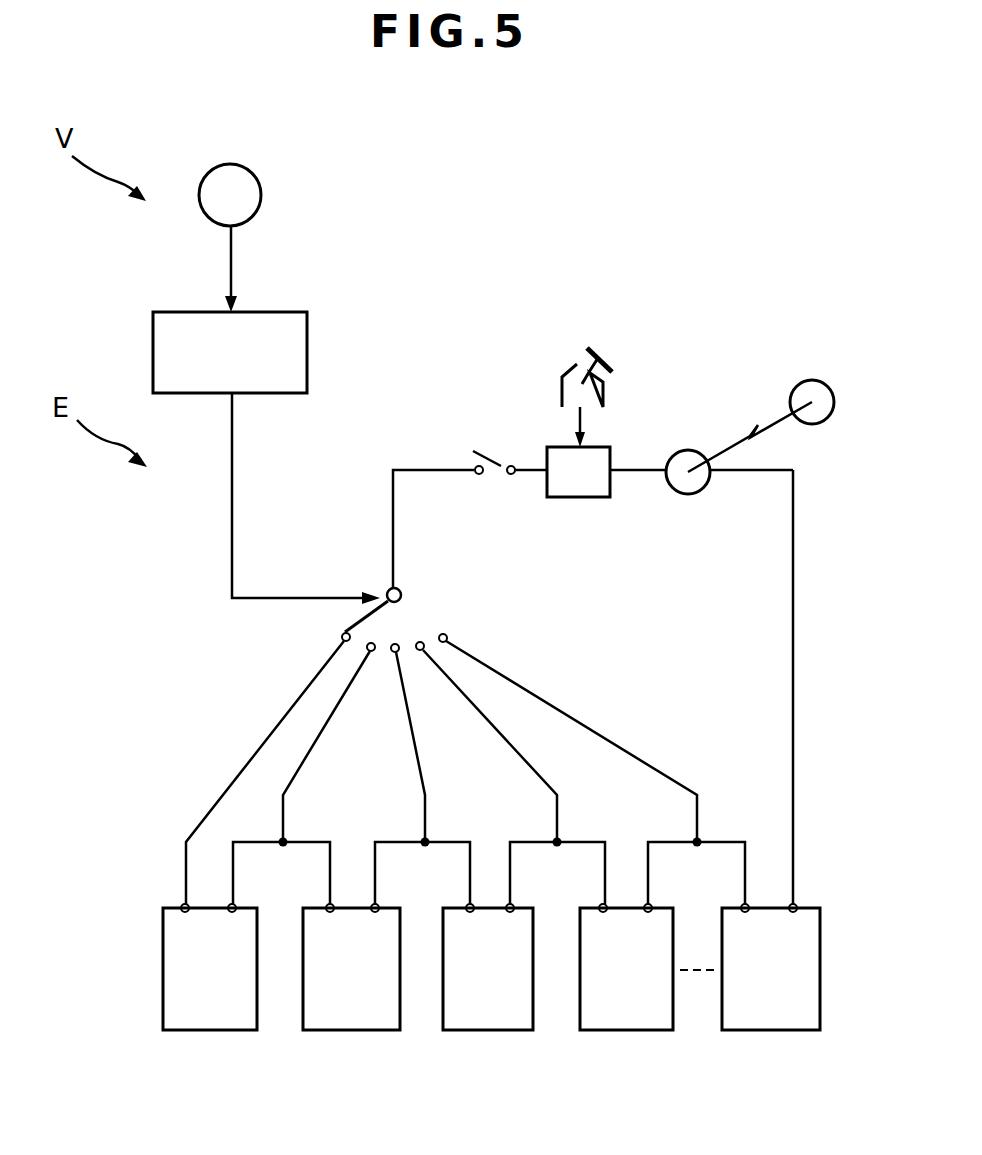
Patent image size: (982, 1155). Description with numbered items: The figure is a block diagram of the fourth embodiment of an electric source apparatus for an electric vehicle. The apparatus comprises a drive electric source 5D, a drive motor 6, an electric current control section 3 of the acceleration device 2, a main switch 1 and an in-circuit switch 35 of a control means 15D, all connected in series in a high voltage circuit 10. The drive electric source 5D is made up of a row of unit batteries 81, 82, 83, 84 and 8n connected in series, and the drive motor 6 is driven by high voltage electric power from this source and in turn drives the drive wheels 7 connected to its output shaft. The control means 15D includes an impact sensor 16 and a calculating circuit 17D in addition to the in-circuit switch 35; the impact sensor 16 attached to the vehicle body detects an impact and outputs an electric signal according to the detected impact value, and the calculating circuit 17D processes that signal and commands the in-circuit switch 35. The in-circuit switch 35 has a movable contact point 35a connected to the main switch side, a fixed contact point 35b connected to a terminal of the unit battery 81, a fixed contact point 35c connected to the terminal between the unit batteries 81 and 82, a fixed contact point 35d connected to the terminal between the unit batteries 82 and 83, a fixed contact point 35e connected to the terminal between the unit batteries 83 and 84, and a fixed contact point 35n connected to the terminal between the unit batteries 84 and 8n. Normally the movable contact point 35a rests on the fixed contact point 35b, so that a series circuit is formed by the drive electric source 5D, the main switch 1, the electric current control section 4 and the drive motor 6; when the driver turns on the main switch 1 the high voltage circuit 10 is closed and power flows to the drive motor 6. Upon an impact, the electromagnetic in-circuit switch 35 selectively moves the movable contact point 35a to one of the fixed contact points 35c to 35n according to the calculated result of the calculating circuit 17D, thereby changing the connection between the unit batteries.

The main switch 1 is at (497, 447).
The acceleration device 2 is at (614, 422).
The electric current control section 3 is at (603, 397).
The electric current control section 4 is at (594, 452).
The drive motor 6 is at (698, 452).
The drive wheels 7 is at (814, 380).
The high voltage circuit 10 is at (794, 572).
The impact sensor 16 is at (261, 197).
The control means 15D is at (186, 295).
The calculating circuit 17D is at (292, 312).
The in-circuit switch 35 is at (370, 589).
The movable contact point 35a is at (360, 615).
The fixed contact point 35b is at (345, 645).
The fixed contact point 35c is at (372, 656).
The fixed contact point 35d is at (400, 656).
The fixed contact point 35e is at (428, 653).
The fixed contact point 35n is at (447, 639).
The drive electric source 5D is at (152, 932).
The unit battery 81 is at (215, 1031).
The unit battery 82 is at (352, 1031).
The unit battery 83 is at (490, 1031).
The unit battery 84 is at (627, 1031).
The unit battery 8n is at (770, 1031).